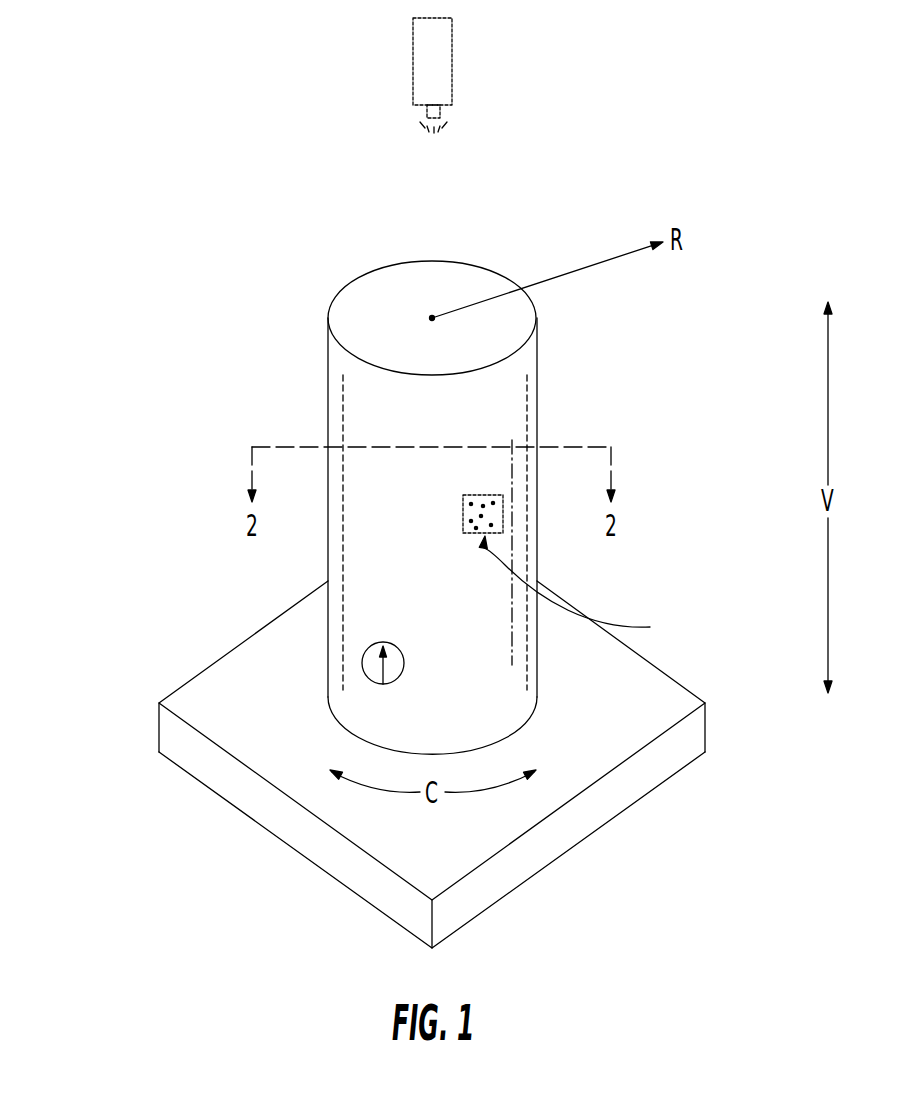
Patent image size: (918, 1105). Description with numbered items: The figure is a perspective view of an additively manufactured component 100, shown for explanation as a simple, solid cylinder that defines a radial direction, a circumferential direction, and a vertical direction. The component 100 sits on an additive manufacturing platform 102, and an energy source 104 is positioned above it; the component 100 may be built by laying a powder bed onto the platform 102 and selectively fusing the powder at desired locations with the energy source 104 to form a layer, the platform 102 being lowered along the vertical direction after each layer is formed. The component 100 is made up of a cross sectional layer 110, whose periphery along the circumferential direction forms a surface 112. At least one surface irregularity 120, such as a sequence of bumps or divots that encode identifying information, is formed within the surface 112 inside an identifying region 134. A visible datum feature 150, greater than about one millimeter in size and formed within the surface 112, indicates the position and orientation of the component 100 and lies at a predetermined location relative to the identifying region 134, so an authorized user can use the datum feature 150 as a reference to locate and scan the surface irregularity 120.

The additively manufactured component 100 is at (88, 369).
The additive manufacturing platform 102 is at (173, 692).
The energy source 104 is at (452, 58).
The cross sectional layer 110 is at (403, 420).
The surface 112 is at (328, 365).
The surface irregularity 120 is at (503, 503).
The identifying region 134 is at (587, 591).
The datum feature 150 is at (362, 663).